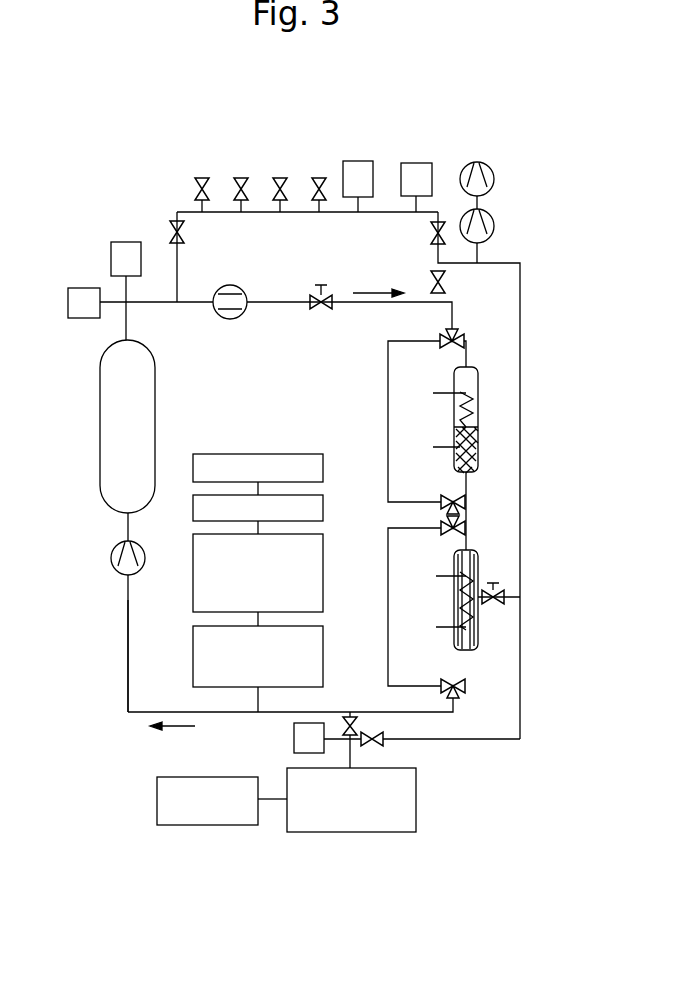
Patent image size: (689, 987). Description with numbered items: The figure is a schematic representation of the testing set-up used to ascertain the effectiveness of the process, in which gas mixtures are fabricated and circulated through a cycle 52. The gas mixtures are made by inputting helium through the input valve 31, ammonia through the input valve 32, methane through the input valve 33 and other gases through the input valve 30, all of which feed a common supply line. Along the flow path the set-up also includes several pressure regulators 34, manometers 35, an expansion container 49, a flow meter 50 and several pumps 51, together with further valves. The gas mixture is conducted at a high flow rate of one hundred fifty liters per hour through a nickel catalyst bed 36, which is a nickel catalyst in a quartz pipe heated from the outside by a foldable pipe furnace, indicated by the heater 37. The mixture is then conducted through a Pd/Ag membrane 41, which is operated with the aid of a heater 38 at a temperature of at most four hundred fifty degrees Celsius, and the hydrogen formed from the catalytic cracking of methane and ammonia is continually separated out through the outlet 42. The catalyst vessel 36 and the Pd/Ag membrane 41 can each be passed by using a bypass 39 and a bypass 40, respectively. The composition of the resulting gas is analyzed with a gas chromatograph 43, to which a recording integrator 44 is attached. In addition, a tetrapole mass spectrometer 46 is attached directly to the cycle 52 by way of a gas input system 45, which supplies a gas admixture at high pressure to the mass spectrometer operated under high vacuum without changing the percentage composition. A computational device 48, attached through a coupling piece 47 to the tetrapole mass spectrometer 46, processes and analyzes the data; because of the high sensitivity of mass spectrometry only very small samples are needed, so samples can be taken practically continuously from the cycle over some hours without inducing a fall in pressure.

The input valve 30 is at (202, 178).
The input valve 31 is at (241, 178).
The input valve 32 is at (280, 178).
The input valve 33 is at (319, 178).
The pressure regulator 34 is at (356, 170).
The manometer 35 is at (414, 170).
The nickel catalyst bed 36 is at (481, 400).
The heater 37 is at (445, 392).
The heater 38 is at (445, 575).
The bypass 39 is at (388, 412).
The bypass 40 is at (388, 603).
The Pd/Ag membrane 41 is at (481, 564).
The outlet 42 is at (483, 603).
The gas chromatograph 43 is at (366, 811).
The recording integrator 44 is at (221, 811).
The gas input system 45 is at (272, 667).
The tetrapole mass spectrometer 46 is at (272, 585).
The coupling piece 47 is at (272, 519).
The computational device 48 is at (272, 479).
The expansion container 49 is at (108, 427).
The flow meter 50 is at (232, 288).
The pump 51 is at (488, 176).
The cycle 52 is at (128, 655).